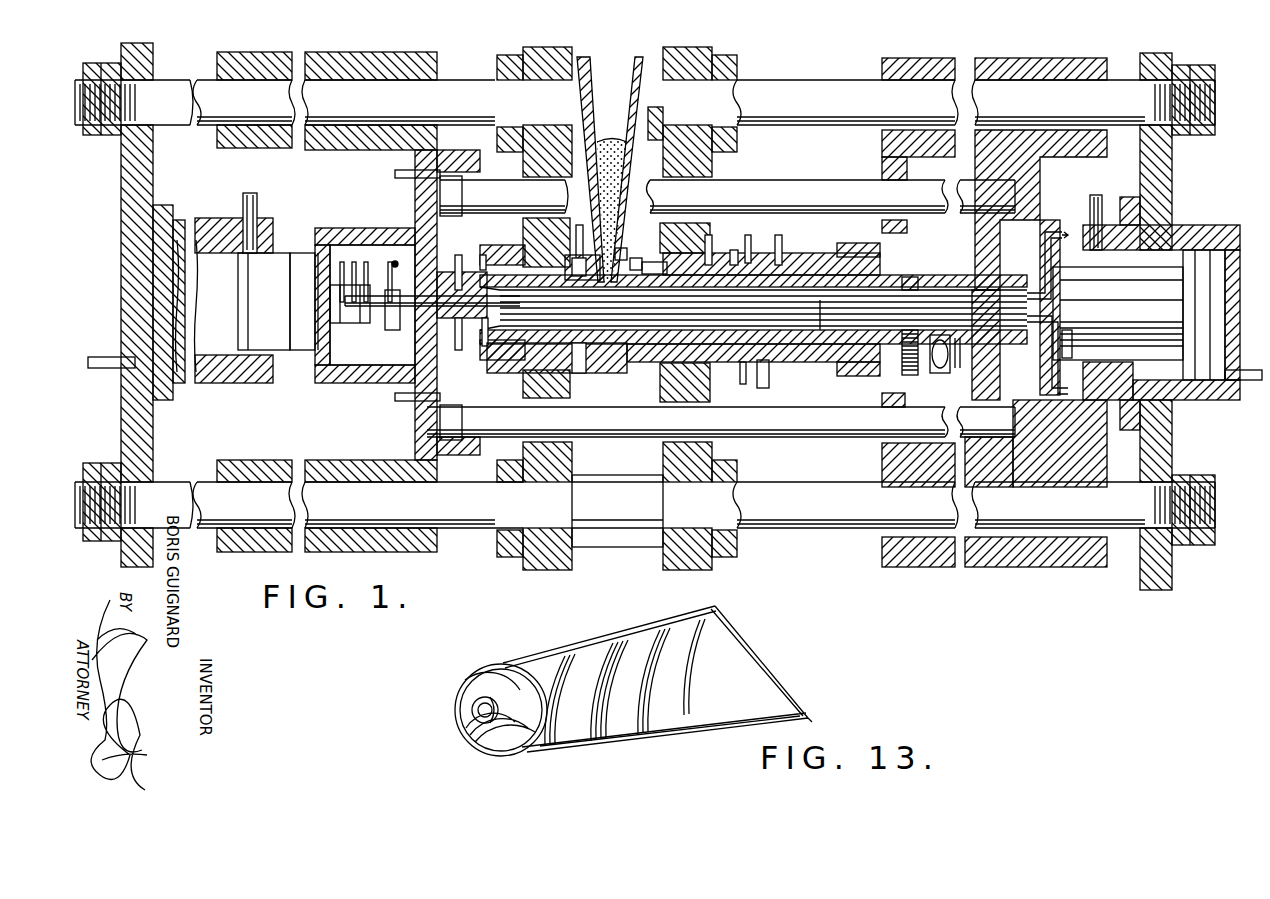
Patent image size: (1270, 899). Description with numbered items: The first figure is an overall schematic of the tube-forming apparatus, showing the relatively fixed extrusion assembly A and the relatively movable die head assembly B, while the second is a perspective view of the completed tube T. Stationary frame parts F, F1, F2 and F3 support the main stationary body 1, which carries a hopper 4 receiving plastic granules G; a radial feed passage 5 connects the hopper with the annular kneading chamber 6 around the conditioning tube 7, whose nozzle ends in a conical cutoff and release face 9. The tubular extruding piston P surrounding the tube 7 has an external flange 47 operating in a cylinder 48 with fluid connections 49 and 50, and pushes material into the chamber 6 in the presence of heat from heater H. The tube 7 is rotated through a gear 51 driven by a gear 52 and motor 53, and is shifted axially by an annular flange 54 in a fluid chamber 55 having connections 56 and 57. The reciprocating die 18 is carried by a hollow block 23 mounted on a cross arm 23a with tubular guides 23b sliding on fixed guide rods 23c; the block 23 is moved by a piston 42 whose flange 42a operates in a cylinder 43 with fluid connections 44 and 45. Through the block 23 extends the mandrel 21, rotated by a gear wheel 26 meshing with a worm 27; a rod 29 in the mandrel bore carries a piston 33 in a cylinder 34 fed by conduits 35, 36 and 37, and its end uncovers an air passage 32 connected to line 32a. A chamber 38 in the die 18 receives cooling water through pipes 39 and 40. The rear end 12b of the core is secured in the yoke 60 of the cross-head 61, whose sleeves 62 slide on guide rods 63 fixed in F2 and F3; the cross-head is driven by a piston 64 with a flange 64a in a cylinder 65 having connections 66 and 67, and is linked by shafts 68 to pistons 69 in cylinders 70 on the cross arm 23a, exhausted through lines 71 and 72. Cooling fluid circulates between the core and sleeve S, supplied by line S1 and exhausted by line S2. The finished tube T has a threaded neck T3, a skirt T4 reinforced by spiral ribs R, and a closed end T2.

In FIG. 1, the stationary frame part F is at (150, 46).
In FIG. 1, the stationary frame part F1 is at (540, 50).
In FIG. 1, the stationary frame part F2 is at (677, 50).
In FIG. 1, the stationary frame part F3 is at (1145, 58).
In FIG. 1, the tubular guide 23b is at (312, 56).
In FIG. 1, the guide rod 23c is at (344, 304).
In FIG. 1, the cross arm 23a is at (414, 205).
In FIG. 1, the hollow reciprocating block 23 is at (352, 230).
In FIG. 1, the hopper 4 is at (594, 60).
In FIG. 1, the plastic granules G is at (611, 140).
In FIG. 1, the sleeve portion 62 is at (1000, 60).
In FIG. 1, the guide rod 63 is at (939, 304).
In FIG. 1, the cylinder 70 is at (456, 156).
In FIG. 1, the line 71 is at (398, 172).
In FIG. 1, the line 72 is at (398, 398).
In FIG. 1, the piston 69 is at (504, 308).
In FIG. 1, the shaft 68 is at (721, 308).
In FIG. 1, the reciprocating head 61 is at (1030, 160).
In FIG. 1, the yoke 60 is at (972, 233).
In FIG. 1, the fluid connection 66 is at (1096, 198).
In FIG. 1, the cylinder 65 is at (1210, 228).
In FIG. 1, the piston 64 is at (1118, 313).
In FIG. 1, the flange 64a is at (1208, 318).
In FIG. 1, the fluid connection 67 is at (1245, 370).
In FIG. 1, the cylinder 43 is at (212, 218).
In FIG. 1, the fluid connection 44 is at (256, 200).
In FIG. 1, the piston 42 is at (300, 252).
In FIG. 1, the flange 42a is at (270, 300).
In FIG. 1, the fluid connection 45 is at (105, 357).
In FIG. 1, the die head assembly B is at (372, 287).
In FIG. 1, the conduit 37 is at (341, 275).
In FIG. 1, the conduit 35 is at (356, 275).
In FIG. 1, the conduit 36 is at (370, 275).
In FIG. 1, the worm 27 is at (395, 274).
In FIG. 1, the rod 29 is at (378, 294).
In FIG. 1, the piston 33 is at (630, 324).
In FIG. 1, the cylinder 34 is at (352, 323).
In FIG. 1, the gear wheel 26 is at (390, 331).
In FIG. 1, the mandrel 21 is at (458, 256).
In FIG. 1, the pipe 39 is at (483, 254).
In FIG. 1, the die 18 is at (496, 262).
In FIG. 1, the heater sleeve H is at (515, 262).
In FIG. 1, the cutoff and release face 9 is at (518, 243).
In FIG. 1, the main stationary body 1 is at (584, 232).
In FIG. 1, the kneading chamber 6 is at (582, 267).
In FIG. 1, the feed passage 5 is at (622, 248).
In FIG. 1, the plastic extruding piston P is at (664, 258).
In FIG. 1, the fluid connection 50 is at (634, 258).
In FIG. 1, the cylinder 48 is at (661, 268).
In FIG. 1, the fluid connection 49 is at (710, 250).
In FIG. 1, the plastic material conditioning tube 7 is at (734, 252).
In FIG. 1, the fluid chamber 55 is at (748, 240).
In FIG. 1, the fluid connection 56 is at (780, 242).
In FIG. 1, the annular flange 54 is at (768, 256).
In FIG. 1, the fluid connection 57 is at (758, 385).
In FIG. 1, the external flange 47 is at (753, 348).
In FIG. 1, the sleeve S is at (882, 292).
In FIG. 1, the air passage 32 is at (820, 308).
In FIG. 1, the gear 51 is at (880, 251).
In FIG. 1, the rear end portion of core 12b is at (917, 278).
In FIG. 1, the gear 52 is at (903, 368).
In FIG. 1, the motor 53 is at (935, 368).
In FIG. 1, the line 32a is at (1066, 345).
In FIG. 1, the fluid line S1 is at (1018, 280).
In FIG. 1, the line S2 is at (1062, 398).
In FIG. 1, the pipe 40 is at (458, 350).
In FIG. 1, the chamber 38 is at (485, 346).
In FIG. 1, the extrusion assembly A is at (646, 373).
In FIG. 13, the tube T is at (515, 647).
In FIG. 13, the tube end T2 is at (503, 750).
In FIG. 13, the threaded neck T3 is at (474, 706).
In FIG. 13, the skirt portion T4 is at (645, 738).
In FIG. 13, the spiral ribs R is at (617, 688).